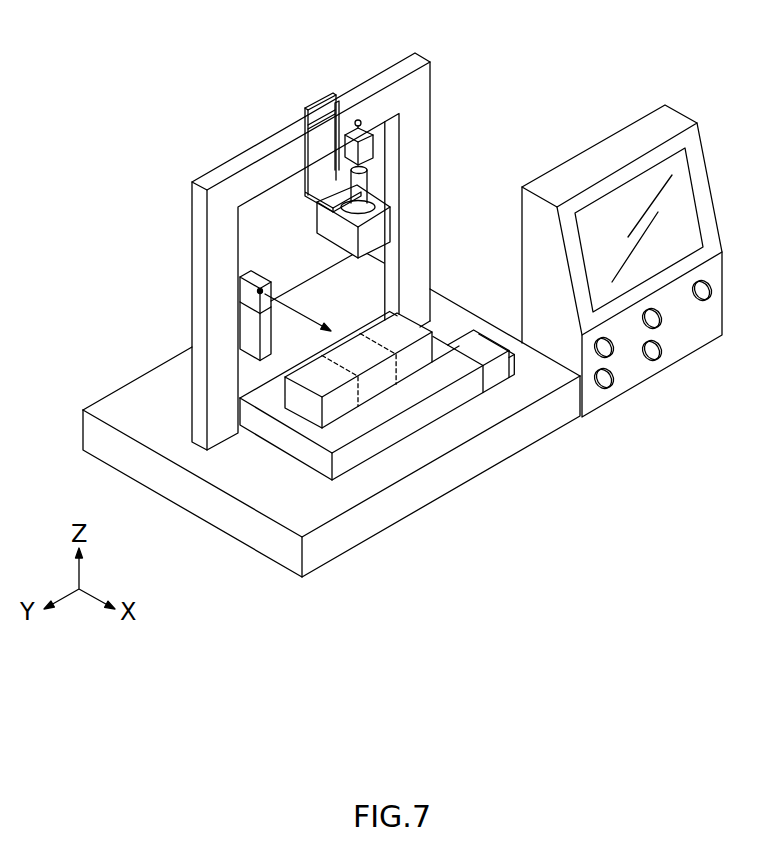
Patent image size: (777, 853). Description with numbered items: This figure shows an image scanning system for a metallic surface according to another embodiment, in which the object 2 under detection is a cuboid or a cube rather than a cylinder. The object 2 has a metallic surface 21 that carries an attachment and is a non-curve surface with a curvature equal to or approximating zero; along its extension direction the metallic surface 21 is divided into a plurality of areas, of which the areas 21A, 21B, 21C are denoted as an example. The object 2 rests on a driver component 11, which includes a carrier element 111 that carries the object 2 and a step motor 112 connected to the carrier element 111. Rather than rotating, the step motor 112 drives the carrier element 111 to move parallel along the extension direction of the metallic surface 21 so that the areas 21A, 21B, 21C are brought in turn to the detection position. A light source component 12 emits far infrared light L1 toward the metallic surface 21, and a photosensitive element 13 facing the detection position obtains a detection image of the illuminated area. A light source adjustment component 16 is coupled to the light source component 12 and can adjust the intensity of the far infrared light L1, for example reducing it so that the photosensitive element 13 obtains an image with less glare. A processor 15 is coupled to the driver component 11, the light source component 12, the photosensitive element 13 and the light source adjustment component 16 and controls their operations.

The object 2 is at (381, 468).
The driver component 11 is at (405, 433).
The light source component 12 is at (245, 278).
The photosensitive element 13 is at (364, 146).
The processor 15 is at (628, 365).
The light source adjustment component 16 is at (243, 328).
The metallic surface 21 is at (381, 467).
The area 21A is at (333, 390).
The area 21B is at (374, 368).
The area 21C is at (414, 348).
The carrier element 111 is at (468, 388).
The step motor 112 is at (502, 367).
The far infrared light L1 is at (248, 316).